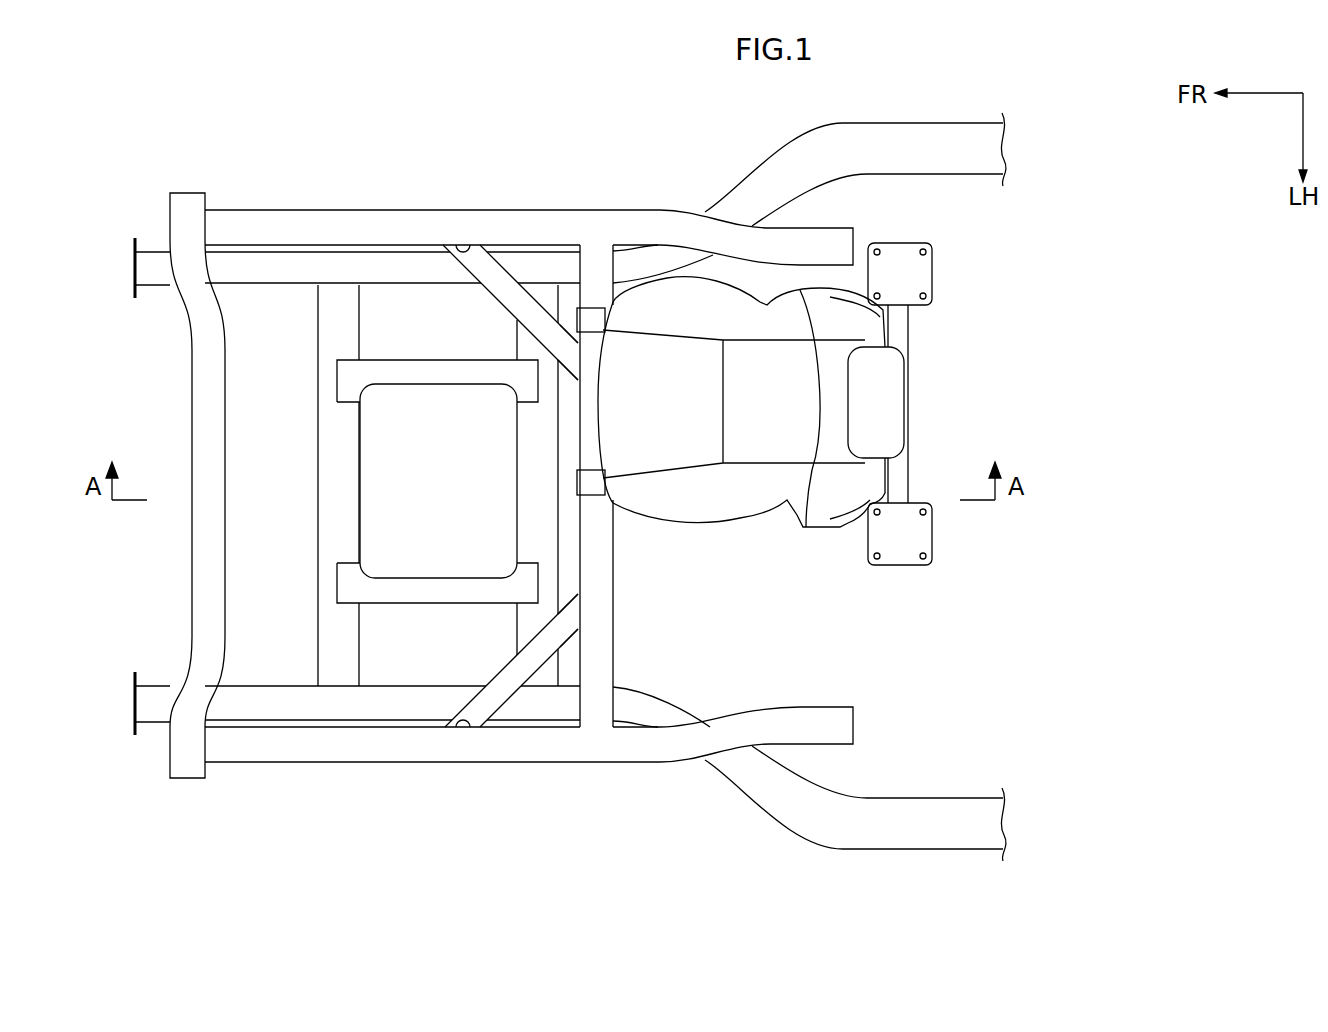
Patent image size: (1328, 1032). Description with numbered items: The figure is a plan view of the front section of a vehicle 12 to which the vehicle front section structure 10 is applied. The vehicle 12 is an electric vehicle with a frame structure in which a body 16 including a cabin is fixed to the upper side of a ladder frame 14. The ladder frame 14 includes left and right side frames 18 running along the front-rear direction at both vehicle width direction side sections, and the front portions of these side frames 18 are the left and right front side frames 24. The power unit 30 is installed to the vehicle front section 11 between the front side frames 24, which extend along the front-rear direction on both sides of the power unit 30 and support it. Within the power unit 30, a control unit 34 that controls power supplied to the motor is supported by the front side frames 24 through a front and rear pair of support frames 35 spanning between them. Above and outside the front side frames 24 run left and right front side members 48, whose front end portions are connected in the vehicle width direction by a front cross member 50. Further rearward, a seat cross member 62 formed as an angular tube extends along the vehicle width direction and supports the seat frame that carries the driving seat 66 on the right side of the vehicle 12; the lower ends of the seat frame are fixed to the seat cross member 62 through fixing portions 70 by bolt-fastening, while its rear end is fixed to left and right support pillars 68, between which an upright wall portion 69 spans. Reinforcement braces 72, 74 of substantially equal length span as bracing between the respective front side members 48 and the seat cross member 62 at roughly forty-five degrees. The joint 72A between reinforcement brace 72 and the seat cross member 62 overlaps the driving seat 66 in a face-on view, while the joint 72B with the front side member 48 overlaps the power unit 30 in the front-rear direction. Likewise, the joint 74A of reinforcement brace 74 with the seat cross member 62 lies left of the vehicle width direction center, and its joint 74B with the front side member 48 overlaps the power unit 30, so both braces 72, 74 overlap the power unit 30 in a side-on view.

The vehicle front section structure 10 is at (290, 203).
The vehicle front section 11 is at (318, 140).
The vehicle 12 is at (238, 116).
The ladder frame 14 is at (826, 870).
The body 16 is at (942, 137).
The side frames 18 is at (880, 113).
The front side frames 24 is at (340, 265).
The power unit 30 is at (463, 481).
The control unit 34 is at (385, 450).
The support frames 35 is at (333, 518).
The front side members 48 is at (406, 199).
The front cross member 50 is at (205, 580).
The seat cross member 62 is at (600, 580).
The driving seat 66 is at (746, 537).
The support pillars 68 is at (912, 270).
The upright wall portion 69 is at (908, 333).
The fixing portions 70 is at (592, 325).
The reinforcement brace 72 is at (497, 275).
The joint 72A is at (570, 357).
The joint 72B is at (468, 243).
The reinforcement brace 74 is at (495, 700).
The joint 74A is at (578, 617).
The joint 74B is at (470, 735).